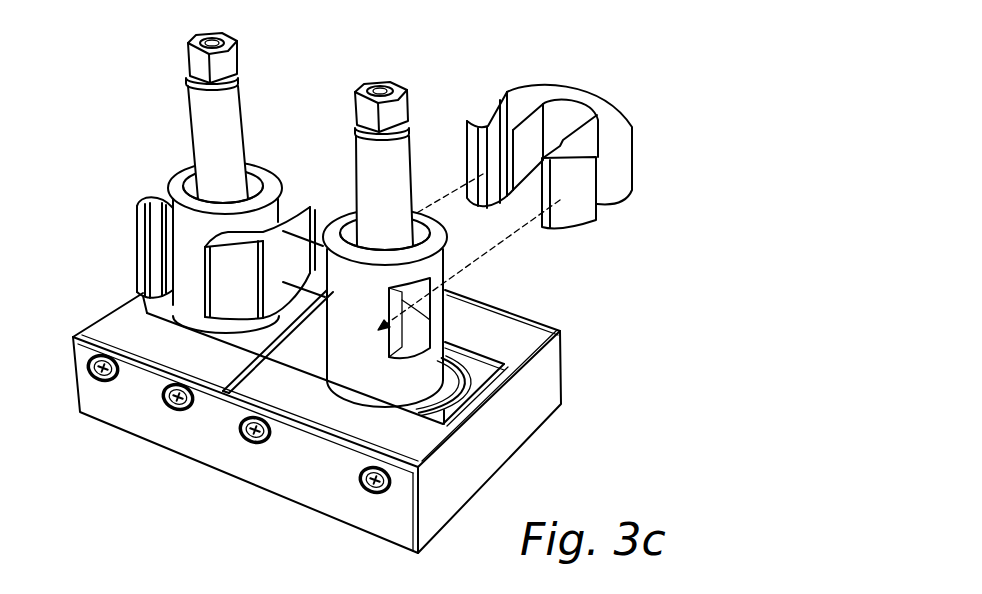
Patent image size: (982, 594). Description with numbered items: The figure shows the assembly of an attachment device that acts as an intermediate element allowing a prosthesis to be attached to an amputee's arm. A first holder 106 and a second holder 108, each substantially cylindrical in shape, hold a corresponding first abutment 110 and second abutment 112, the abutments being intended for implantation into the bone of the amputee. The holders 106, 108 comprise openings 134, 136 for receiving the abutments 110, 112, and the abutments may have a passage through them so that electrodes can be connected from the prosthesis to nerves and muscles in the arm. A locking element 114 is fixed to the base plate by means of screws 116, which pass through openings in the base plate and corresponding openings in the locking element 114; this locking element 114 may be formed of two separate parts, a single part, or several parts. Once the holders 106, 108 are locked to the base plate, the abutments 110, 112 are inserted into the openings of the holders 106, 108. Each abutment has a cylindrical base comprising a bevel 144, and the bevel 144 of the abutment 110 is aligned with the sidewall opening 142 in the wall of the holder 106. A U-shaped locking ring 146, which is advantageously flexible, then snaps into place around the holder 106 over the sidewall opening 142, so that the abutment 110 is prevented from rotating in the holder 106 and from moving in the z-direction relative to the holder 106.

The first holder 106 is at (437, 370).
The second holder 108 is at (170, 223).
The first abutment 110 is at (476, 234).
The second abutment 112 is at (232, 113).
The locking element 114 is at (352, 428).
The screws 116 is at (165, 410).
The opening of first holder 134 is at (348, 233).
The opening of second holder 136 is at (253, 177).
The sidewall opening 142 is at (443, 308).
The bevel 144 is at (422, 328).
The U-shaped locking ring 146 is at (148, 208).